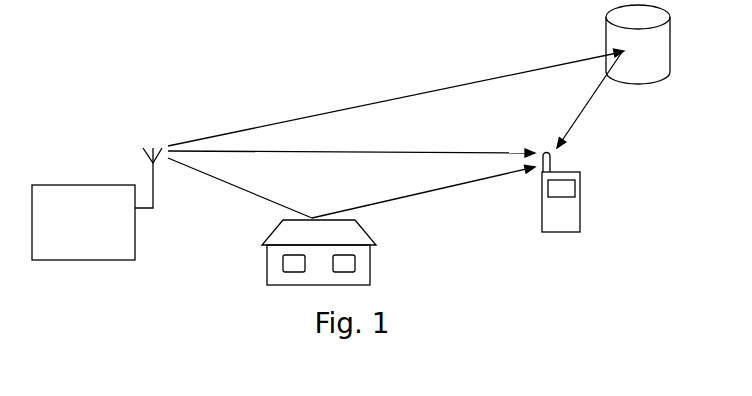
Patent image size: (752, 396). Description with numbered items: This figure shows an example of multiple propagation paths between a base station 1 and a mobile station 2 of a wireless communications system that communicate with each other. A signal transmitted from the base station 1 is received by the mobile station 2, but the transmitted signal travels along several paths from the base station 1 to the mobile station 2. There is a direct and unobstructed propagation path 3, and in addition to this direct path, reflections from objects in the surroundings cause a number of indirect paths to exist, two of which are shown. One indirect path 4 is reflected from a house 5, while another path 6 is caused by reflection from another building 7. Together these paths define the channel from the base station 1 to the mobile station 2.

The base station 1 is at (88, 184).
The mobile station 2 is at (580, 210).
The direct and unobstructed propagation path 3 is at (410, 150).
The indirect path 4 is at (417, 195).
The house 5 is at (372, 257).
The path 6 is at (467, 82).
The building 7 is at (632, 80).